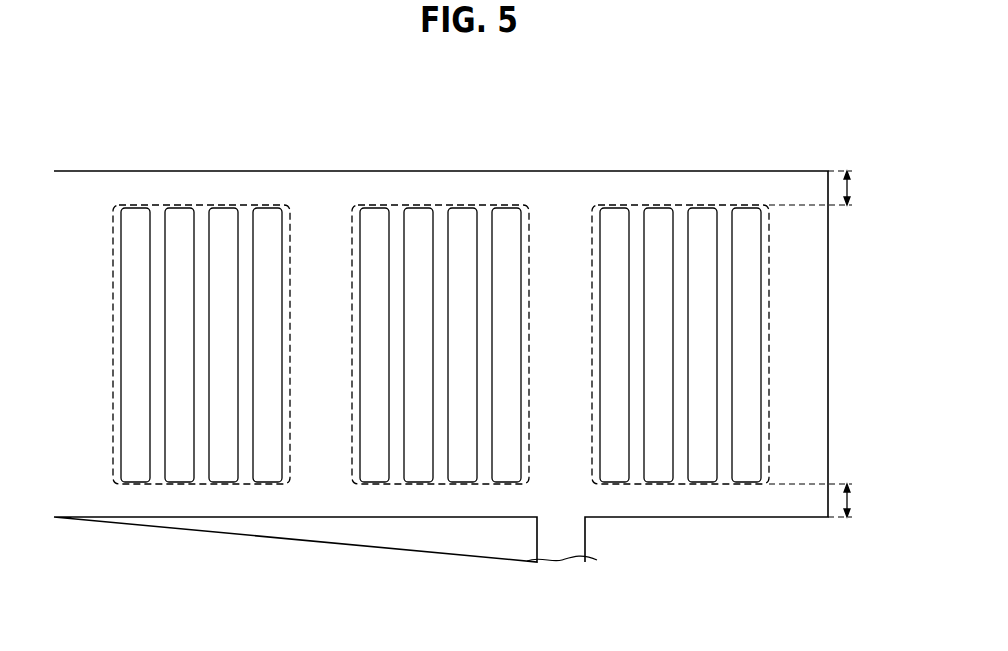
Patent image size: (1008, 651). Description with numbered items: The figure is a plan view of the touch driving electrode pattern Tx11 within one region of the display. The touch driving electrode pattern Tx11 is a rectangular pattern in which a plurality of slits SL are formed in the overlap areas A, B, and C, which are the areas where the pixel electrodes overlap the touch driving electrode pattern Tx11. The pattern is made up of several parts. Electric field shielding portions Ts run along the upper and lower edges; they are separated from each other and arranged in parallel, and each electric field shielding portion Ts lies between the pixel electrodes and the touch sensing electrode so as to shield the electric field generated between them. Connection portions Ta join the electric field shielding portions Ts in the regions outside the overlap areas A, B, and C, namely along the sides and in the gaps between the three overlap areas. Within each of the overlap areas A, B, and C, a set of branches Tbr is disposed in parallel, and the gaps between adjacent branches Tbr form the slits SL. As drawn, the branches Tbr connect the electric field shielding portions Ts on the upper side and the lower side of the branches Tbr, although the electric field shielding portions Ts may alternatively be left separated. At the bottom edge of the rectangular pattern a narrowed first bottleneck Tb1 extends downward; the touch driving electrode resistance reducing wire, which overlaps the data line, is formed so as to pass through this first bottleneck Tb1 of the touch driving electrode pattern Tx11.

The touch driving electrode pattern Tx11 is at (157, 132).
The overlap area A is at (225, 207).
The overlap area B is at (465, 207).
The overlap area C is at (704, 207).
The slit SL is at (745, 217).
The connection portion Ta is at (320, 220).
The electric field shielding portion Ts is at (821, 344).
The branch Tbr is at (236, 468).
The first bottleneck Tb1 is at (572, 540).